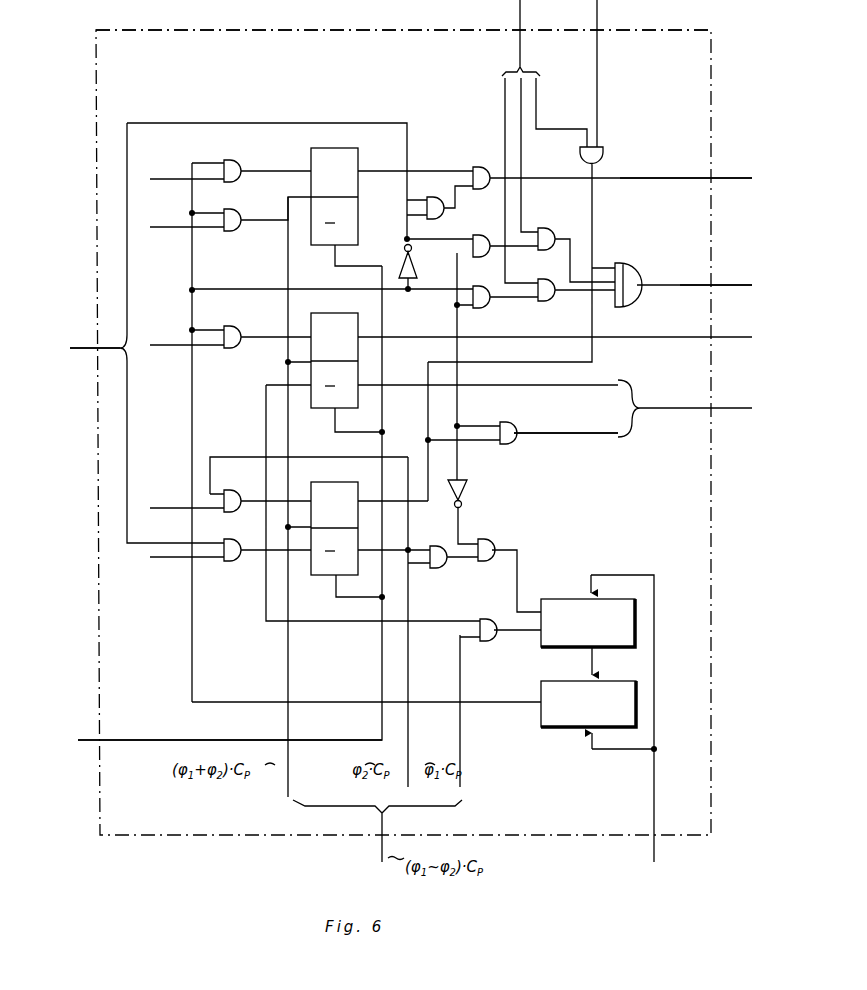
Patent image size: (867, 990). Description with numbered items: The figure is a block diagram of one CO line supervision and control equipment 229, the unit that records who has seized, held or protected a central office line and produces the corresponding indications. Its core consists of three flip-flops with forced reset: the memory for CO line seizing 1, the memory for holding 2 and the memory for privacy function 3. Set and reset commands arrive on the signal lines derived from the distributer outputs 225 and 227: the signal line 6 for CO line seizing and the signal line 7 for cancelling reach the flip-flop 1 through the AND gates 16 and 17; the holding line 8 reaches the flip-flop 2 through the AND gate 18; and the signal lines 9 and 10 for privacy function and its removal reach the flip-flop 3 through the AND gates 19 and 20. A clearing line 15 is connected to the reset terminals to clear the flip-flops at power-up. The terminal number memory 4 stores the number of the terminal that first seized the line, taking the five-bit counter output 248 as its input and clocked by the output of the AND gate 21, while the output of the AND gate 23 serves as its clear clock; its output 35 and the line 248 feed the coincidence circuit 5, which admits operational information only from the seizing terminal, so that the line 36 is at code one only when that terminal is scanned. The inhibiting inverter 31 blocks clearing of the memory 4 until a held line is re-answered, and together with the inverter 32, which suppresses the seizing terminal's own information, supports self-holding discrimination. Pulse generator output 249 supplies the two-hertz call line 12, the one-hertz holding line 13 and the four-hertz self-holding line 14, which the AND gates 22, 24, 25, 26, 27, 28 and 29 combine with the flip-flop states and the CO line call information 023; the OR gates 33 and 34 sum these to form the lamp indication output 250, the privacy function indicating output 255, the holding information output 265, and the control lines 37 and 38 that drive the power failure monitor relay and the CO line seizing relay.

The memory for CO line seizing 1 is at (345, 483).
The memory for holding 2 is at (342, 316).
The memory for privacy function 3 is at (341, 150).
The terminal number memory 4 is at (567, 598).
The coincidence circuit 5 is at (566, 755).
The signal line for CO line seizing 6 is at (168, 512).
The signal line for CO line cancelling 7 is at (168, 560).
The holding signal line 8 is at (160, 346).
The signal line for CO line privacy function 9 is at (153, 186).
The signal line for privacy function removing 10 is at (154, 232).
The 2Hz call signal line 12 is at (536, 107).
The 1Hz holding signal line 13 is at (518, 158).
The 4Hz self-holding discrimination signal line 14 is at (159, 124).
The clearing line 15 is at (230, 731).
The AND gate 16 is at (241, 495).
The AND gate 17 is at (246, 540).
The AND gate 18 is at (239, 338).
The AND gate 19 is at (236, 168).
The AND gate 20 is at (237, 222).
The AND gate 21 is at (488, 616).
The AND gate 22 is at (438, 546).
The AND gate 23 is at (496, 544).
The AND gate 24 is at (483, 234).
The AND gate 25 is at (545, 228).
The AND gate 26 is at (505, 310).
The AND gate 27 is at (539, 308).
The AND gate 28 is at (603, 155).
The AND gate 29 is at (440, 192).
The inhibiting inverter 31 is at (470, 487).
The inhibit inverter 32 is at (414, 258).
The OR gate 33 is at (629, 265).
The OR gate 34 is at (482, 166).
The output of terminal number memory 35 is at (586, 666).
The scan coincidence line 36 is at (200, 660).
The control line for electric power failure monitor relay 37 is at (595, 390).
The control line for CO line seizing relay 38 is at (614, 440).
The output of signal distributer 225 is at (78, 352).
The output of signal distributer 227 is at (88, 391).
The CO line supervision and control equipment 229 is at (186, 27).
The output of terminal numeral counter 248 is at (657, 856).
The output of pulse generator 249 is at (516, 24).
The lamp indication display output 250 is at (727, 284).
The privacy function indicating output 255 is at (727, 180).
The holding information output 265 is at (727, 342).
The CO line call information 023 is at (599, 13).